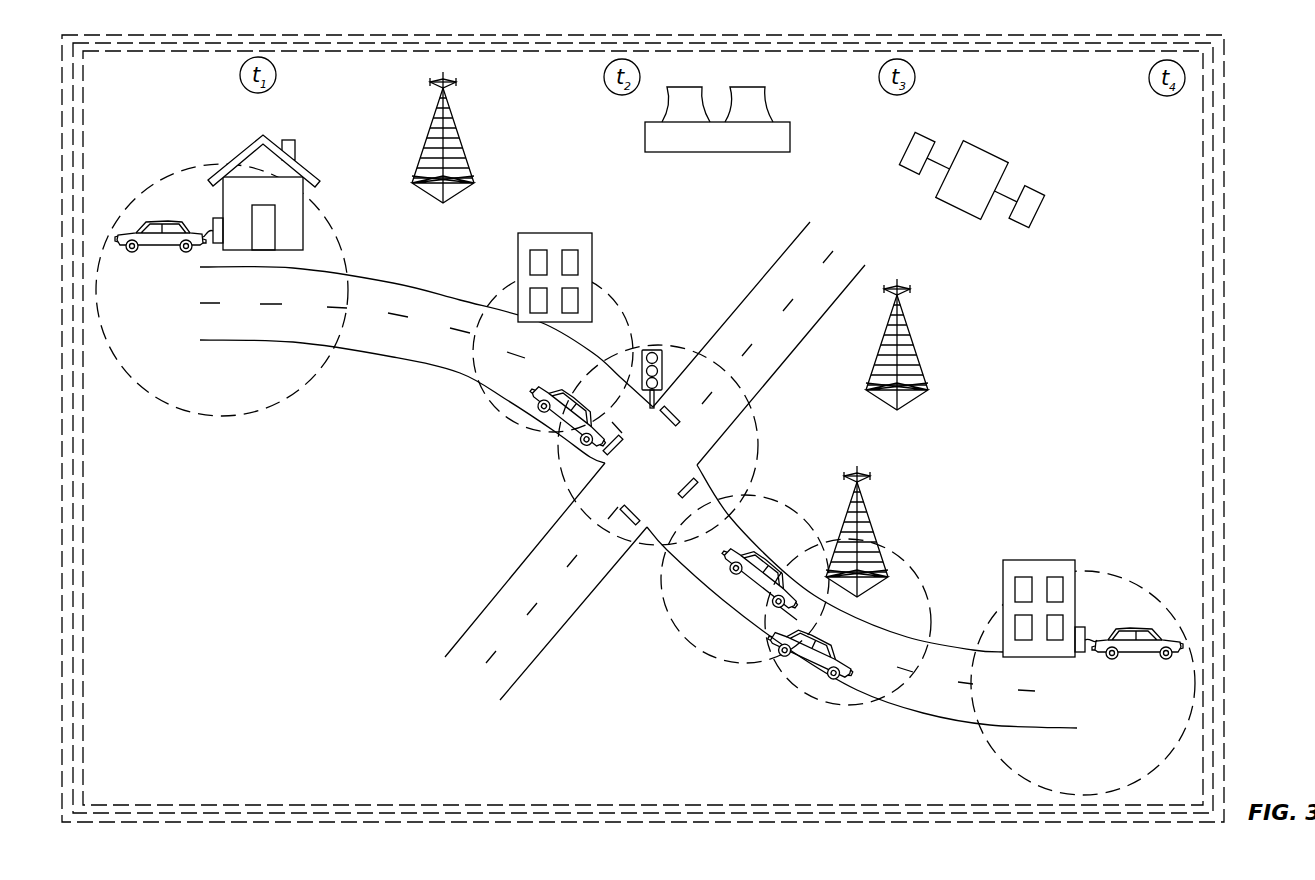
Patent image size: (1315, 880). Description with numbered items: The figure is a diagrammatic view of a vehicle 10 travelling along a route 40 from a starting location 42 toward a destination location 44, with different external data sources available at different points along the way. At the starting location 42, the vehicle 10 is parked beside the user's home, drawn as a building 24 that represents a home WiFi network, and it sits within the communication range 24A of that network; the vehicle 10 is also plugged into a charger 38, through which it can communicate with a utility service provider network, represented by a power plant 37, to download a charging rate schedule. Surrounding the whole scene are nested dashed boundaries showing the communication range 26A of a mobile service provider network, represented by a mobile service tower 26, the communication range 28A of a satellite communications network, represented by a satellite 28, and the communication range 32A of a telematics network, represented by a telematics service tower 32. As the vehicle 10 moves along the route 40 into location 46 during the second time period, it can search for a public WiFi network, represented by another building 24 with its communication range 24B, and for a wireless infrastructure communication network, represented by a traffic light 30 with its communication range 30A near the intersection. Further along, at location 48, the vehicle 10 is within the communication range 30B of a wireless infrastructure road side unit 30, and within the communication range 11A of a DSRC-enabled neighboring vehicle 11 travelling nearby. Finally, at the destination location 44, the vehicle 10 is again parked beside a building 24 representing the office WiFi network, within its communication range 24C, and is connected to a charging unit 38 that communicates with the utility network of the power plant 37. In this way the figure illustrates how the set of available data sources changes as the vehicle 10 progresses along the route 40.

The vehicle 10 is at (158, 253).
The DSRC-enabled neighboring vehicle 11 is at (730, 613).
The communication range of neighboring vehicle 11A is at (758, 490).
The building 24 is at (288, 182).
The communication range of home WiFi network 24A is at (340, 243).
The communication range 24B is at (615, 304).
The communication range of office WiFi network 24C is at (1112, 573).
The mobile service tower 26 is at (462, 131).
The communication range of mobile service provider network 26A is at (500, 48).
The satellite 28 is at (1000, 137).
The communication range of satellite communications network 28A is at (826, 40).
The traffic light / road side unit 30 is at (653, 347).
The communication range 30A is at (758, 418).
The communication range of road side unit 30B is at (907, 579).
The telematics service tower 32 is at (905, 318).
The communication range of telematics network 32A is at (372, 50).
The power plant 37 is at (782, 138).
The charger 38 is at (212, 227).
The route 40 is at (390, 353).
The starting location 42 is at (228, 142).
The destination location 44 is at (1087, 545).
The location 46 is at (575, 453).
The location 48 is at (840, 698).